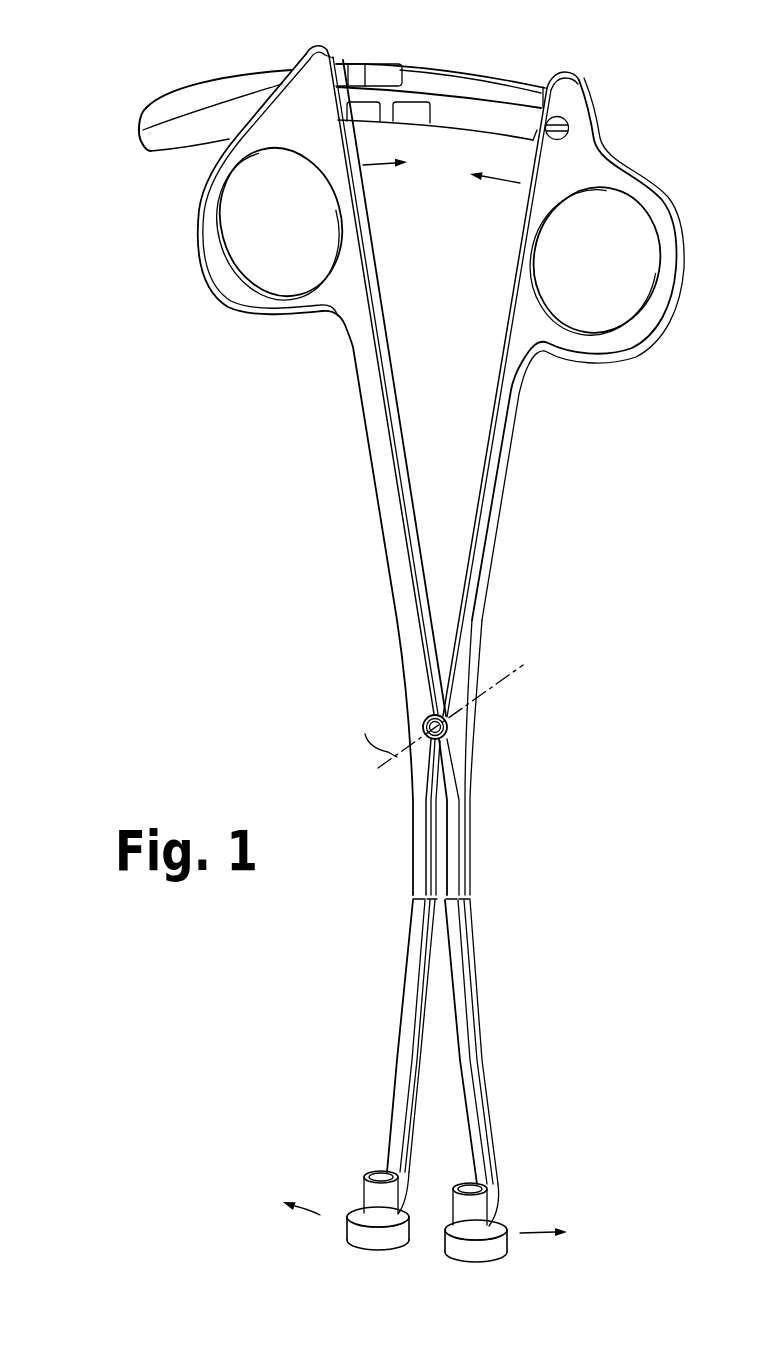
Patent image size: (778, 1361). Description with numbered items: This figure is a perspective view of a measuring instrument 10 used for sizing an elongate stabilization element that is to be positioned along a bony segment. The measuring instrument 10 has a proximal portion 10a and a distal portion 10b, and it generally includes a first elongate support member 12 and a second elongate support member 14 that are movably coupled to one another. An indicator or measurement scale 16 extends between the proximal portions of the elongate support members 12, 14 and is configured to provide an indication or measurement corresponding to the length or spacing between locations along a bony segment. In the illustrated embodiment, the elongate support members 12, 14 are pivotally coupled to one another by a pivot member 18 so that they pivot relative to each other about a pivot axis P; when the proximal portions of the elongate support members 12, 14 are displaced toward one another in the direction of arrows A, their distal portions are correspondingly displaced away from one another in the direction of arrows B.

The measuring instrument 10 is at (130, 358).
The proximal portion 10a is at (118, 66).
The distal portion 10b is at (300, 1273).
The first elongate support member 12 is at (340, 563).
The second elongate support member 14 is at (520, 532).
The measurement scale 16 is at (493, 46).
The pivot member 18 is at (452, 737).